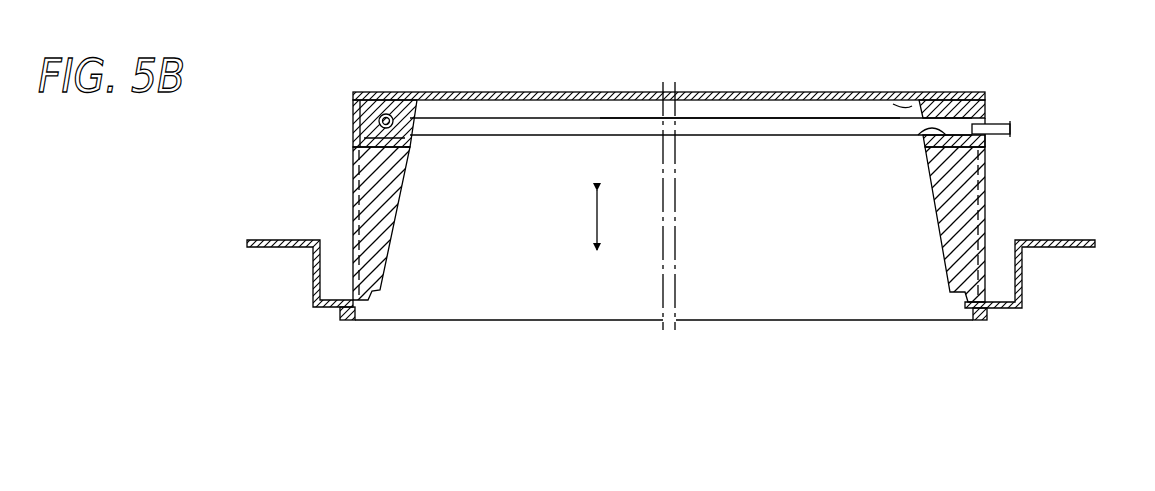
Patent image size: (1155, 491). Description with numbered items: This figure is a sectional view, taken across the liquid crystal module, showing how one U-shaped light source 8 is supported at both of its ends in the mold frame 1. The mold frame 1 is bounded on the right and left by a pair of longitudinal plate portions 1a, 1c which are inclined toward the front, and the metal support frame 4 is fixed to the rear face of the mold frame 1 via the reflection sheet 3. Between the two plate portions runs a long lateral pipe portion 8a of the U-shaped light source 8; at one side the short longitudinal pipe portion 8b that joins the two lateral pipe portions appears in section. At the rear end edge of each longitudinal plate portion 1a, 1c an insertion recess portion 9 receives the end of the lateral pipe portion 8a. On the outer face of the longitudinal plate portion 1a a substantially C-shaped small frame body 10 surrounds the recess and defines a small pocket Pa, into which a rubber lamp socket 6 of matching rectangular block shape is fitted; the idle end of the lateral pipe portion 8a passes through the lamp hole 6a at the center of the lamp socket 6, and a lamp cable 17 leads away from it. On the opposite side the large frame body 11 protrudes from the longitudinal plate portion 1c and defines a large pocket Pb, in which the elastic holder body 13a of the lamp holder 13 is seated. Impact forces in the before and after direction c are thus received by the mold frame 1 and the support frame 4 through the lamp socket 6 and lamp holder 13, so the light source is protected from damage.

The mold frame 1 is at (1030, 271).
The longitudinal plate portion 1a is at (940, 234).
The longitudinal plate portion 1c is at (398, 203).
The reflection sheet 3 is at (711, 103).
The support frame 4 is at (738, 92).
The lamp socket 6 is at (990, 120).
The lamp hole 6a is at (927, 128).
The U-shaped light source 8 is at (808, 142).
The lateral pipe portion 8a is at (750, 127).
The longitudinal pipe portion 8b is at (378, 91).
The insertion recess portion 9 is at (893, 103).
The small frame body 10 is at (983, 225).
The large frame body 11 is at (352, 202).
The lamp holder 13 is at (329, 112).
The holder body 13a is at (367, 140).
The lamp cable 17 is at (1012, 130).
The small pocket Pa is at (986, 150).
The large pocket Pb is at (412, 140).
The before and after direction c is at (588, 220).